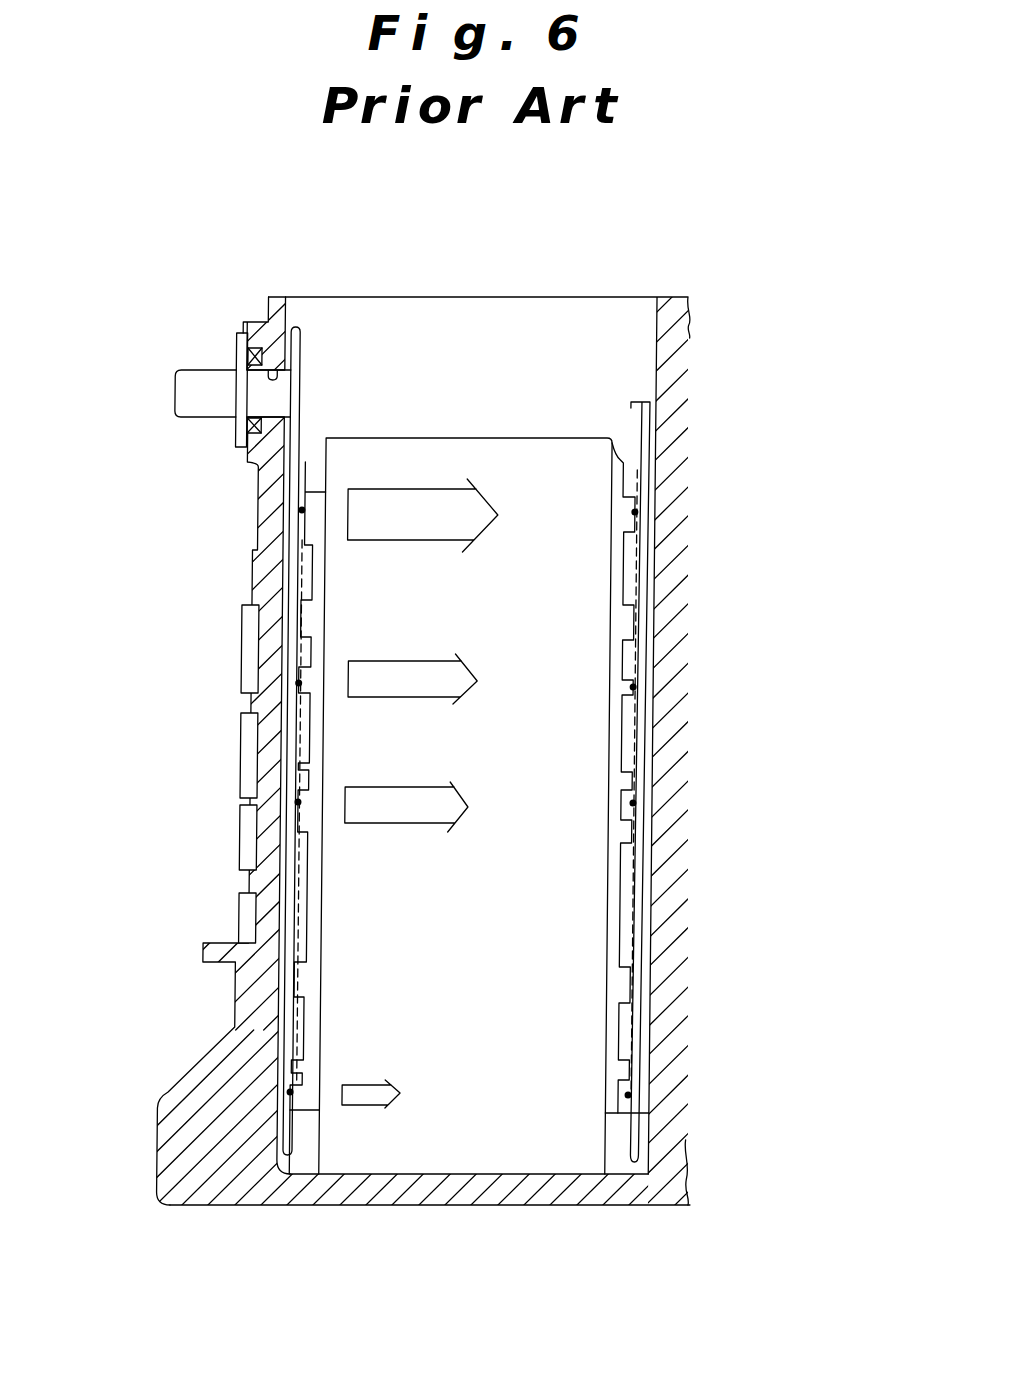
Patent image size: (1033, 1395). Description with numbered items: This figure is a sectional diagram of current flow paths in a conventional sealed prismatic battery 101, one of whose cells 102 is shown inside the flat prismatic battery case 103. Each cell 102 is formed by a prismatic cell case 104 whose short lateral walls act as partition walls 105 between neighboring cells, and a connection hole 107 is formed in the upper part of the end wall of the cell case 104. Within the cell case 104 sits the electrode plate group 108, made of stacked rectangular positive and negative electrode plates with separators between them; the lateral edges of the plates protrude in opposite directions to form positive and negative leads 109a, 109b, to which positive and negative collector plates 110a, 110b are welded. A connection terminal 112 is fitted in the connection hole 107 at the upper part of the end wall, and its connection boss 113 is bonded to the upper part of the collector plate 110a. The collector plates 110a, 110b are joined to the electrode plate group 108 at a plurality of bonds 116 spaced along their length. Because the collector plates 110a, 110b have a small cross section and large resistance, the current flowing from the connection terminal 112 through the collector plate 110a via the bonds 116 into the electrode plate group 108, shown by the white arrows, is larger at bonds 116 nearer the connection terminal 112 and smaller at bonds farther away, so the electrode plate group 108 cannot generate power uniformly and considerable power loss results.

The sealed prismatic battery 101 is at (514, 1222).
The cell 102 is at (312, 1166).
The battery case 103 is at (223, 895).
The cell case 104 is at (469, 386).
The partition wall 105 is at (662, 331).
The connection hole 107 is at (268, 365).
The electrode plate group 108 is at (467, 767).
The positive lead 109a is at (296, 734).
The negative lead 109b is at (617, 748).
The positive collector plate 110a is at (306, 728).
The negative collector plate 110b is at (638, 733).
The connection terminal 112 is at (184, 397).
The connection boss 113 is at (283, 388).
The bond 116 is at (299, 510).